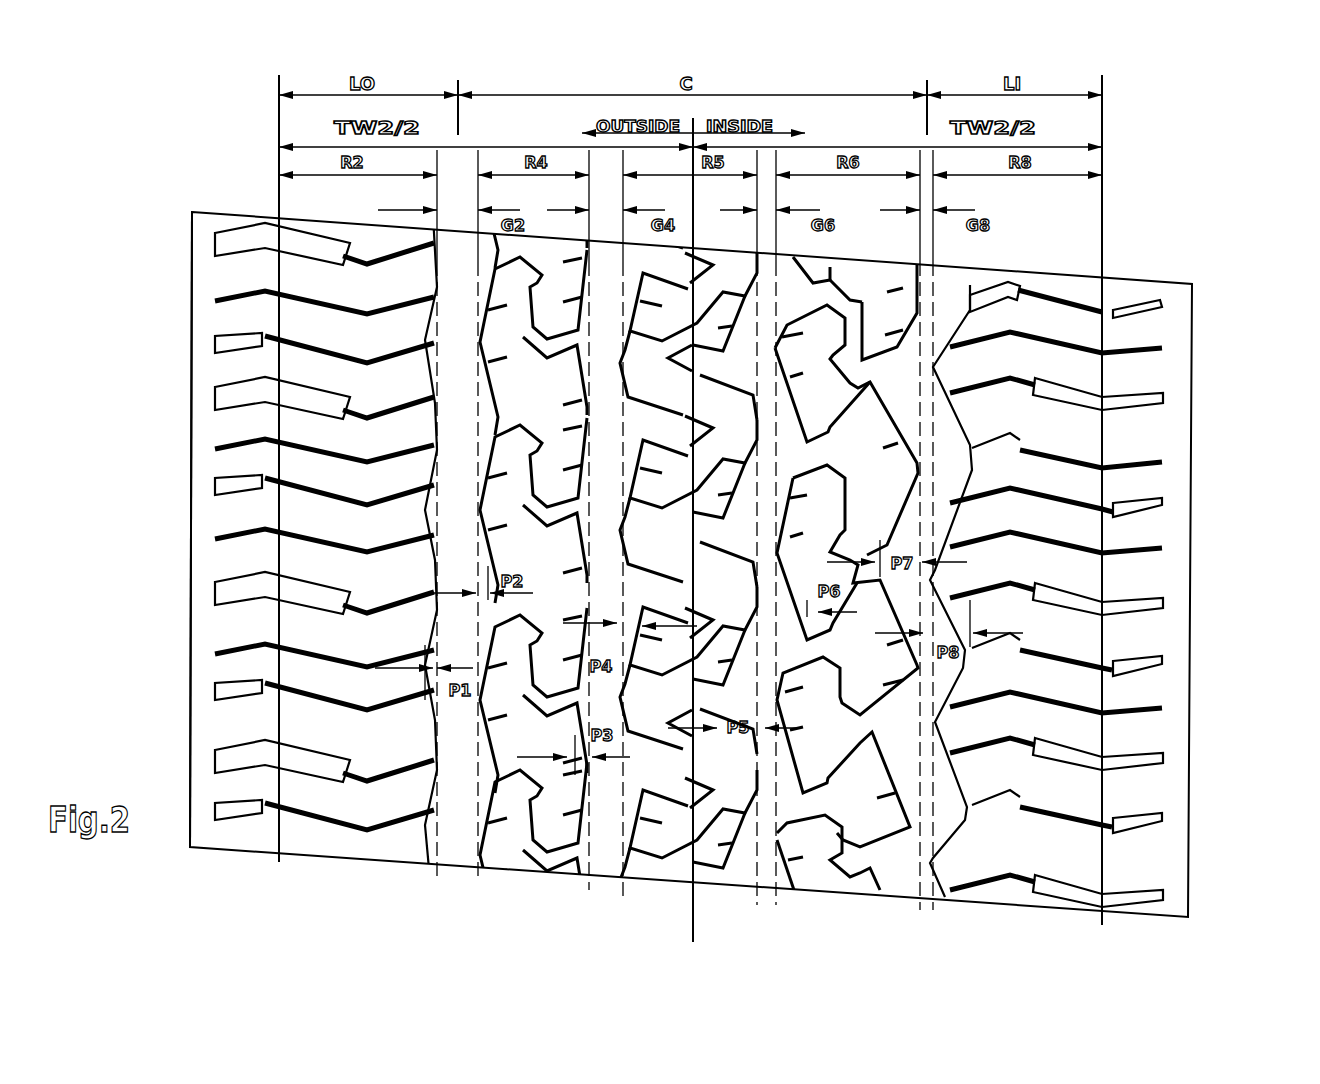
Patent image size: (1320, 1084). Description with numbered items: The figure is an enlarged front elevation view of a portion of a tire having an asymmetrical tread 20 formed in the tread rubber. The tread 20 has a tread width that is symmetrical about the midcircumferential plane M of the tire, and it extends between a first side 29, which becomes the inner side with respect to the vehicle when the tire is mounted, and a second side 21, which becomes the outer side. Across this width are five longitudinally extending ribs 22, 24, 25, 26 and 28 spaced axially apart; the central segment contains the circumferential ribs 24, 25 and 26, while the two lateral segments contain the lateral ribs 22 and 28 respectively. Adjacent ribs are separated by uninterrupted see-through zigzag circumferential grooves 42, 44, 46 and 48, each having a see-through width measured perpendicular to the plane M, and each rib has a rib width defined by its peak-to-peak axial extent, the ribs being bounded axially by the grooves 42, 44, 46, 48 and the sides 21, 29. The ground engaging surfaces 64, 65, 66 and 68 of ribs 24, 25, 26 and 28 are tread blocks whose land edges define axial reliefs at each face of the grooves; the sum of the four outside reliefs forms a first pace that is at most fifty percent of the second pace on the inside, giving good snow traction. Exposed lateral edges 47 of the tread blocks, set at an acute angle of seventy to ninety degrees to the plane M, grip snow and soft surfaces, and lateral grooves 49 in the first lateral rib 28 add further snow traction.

The asymmetrical tread 20 is at (1200, 550).
The second side 21 is at (215, 519).
The lateral rib 22 is at (398, 828).
The circumferential rib 24 is at (517, 858).
The circumferential rib 25 is at (663, 860).
The circumferential rib 26 is at (820, 878).
The first lateral rib 28 is at (1007, 888).
The first side 29 is at (1160, 648).
The circumferential zigzag groove 42 is at (455, 858).
The circumferential zigzag groove 44 is at (600, 866).
The circumferential zigzag groove 46 is at (770, 890).
The exposed lateral edges 47 is at (665, 614).
The circumferential zigzag groove 48 is at (915, 888).
The lateral grooves 49 is at (982, 653).
The ground engaging surface 64 is at (567, 580).
The ground engaging surface 65 is at (405, 588).
The ground engaging surface 66 is at (824, 549).
The ground engaging surface 68 is at (1020, 564).
The midcircumferential plane M is at (694, 932).